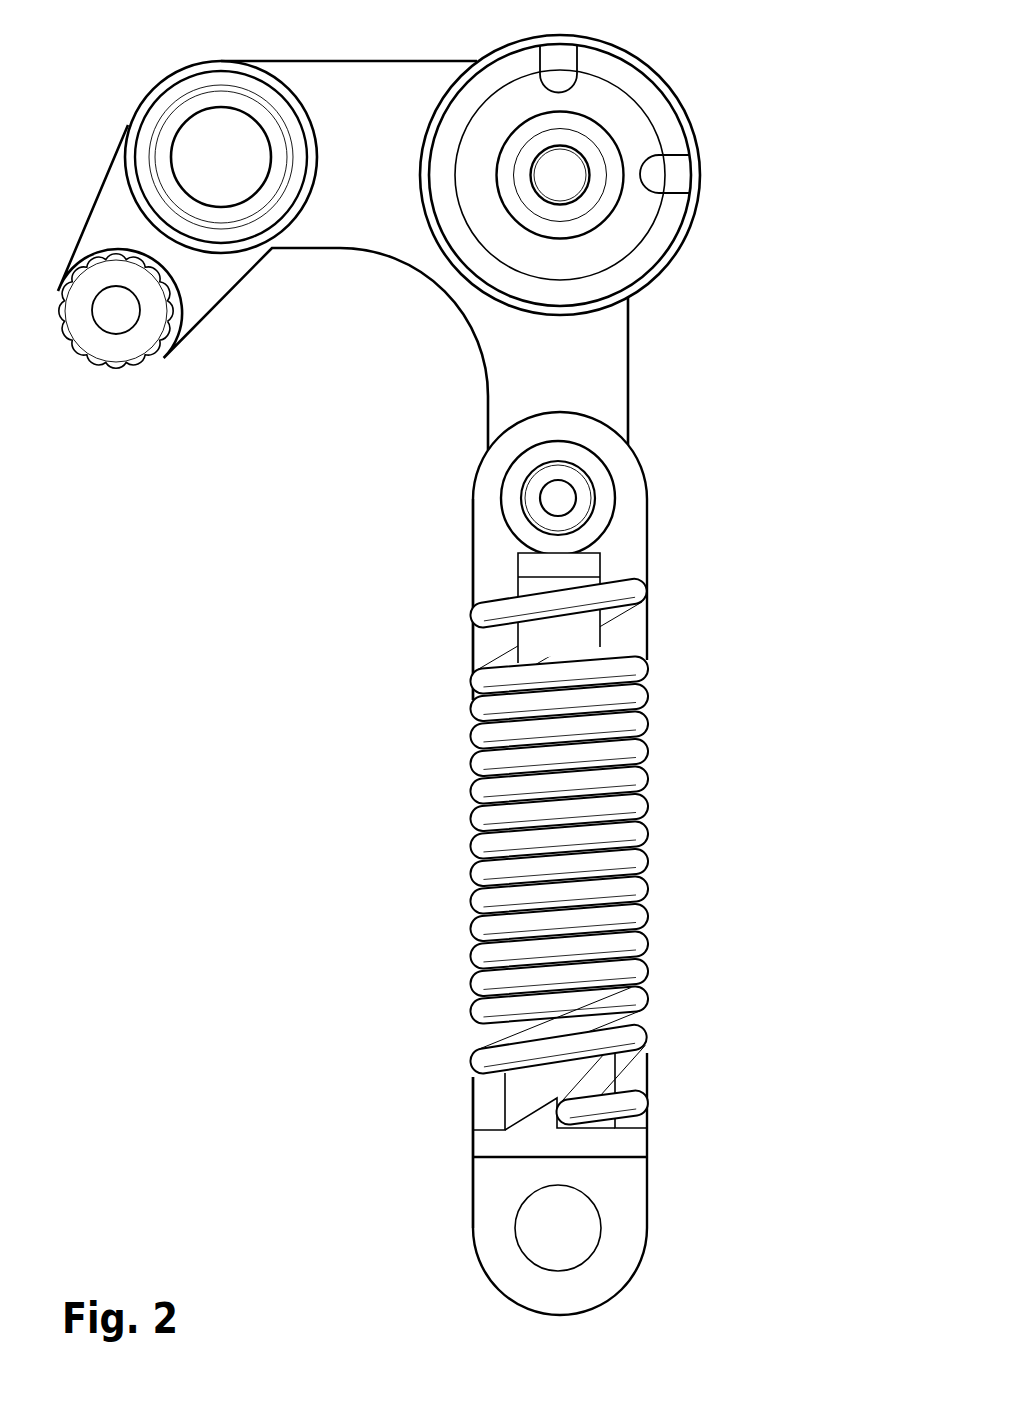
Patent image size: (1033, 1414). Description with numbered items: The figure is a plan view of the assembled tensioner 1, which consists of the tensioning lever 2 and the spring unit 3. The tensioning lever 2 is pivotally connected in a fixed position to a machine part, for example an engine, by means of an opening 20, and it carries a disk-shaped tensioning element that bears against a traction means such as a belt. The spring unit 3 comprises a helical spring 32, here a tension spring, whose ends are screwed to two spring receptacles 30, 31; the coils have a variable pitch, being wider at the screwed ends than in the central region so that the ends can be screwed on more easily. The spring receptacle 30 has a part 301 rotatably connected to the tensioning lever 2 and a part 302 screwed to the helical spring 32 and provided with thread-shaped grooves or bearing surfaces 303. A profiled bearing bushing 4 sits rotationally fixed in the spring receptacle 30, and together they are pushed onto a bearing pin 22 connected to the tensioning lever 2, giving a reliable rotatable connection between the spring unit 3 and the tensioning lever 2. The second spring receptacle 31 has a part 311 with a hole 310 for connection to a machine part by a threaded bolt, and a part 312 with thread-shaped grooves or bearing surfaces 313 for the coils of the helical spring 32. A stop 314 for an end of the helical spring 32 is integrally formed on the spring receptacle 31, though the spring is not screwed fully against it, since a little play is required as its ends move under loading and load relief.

The tensioner 1 is at (700, 82).
The tensioning lever 2 is at (335, 57).
The opening 20 is at (190, 128).
The bearing pin 22 is at (535, 490).
The spring unit 3 is at (566, 839).
The bearing bushing 4 is at (605, 475).
The spring receptacle 30 is at (556, 556).
The part rotatably connected to the tensioning lever 301 is at (485, 548).
The part screwed to the helical spring 302 is at (580, 630).
The thread-shaped grooves or bearing surfaces 303 is at (559, 623).
The helical spring 32 is at (482, 903).
The spring receptacle 31 is at (561, 1196).
The hole 310 is at (590, 1252).
The part provided with the hole 311 is at (487, 1210).
The part provided with thread-shaped grooves or bearing surfaces 312 is at (525, 1092).
The thread-shaped grooves or bearing surfaces 313 is at (645, 1050).
The stop 314 is at (550, 1113).